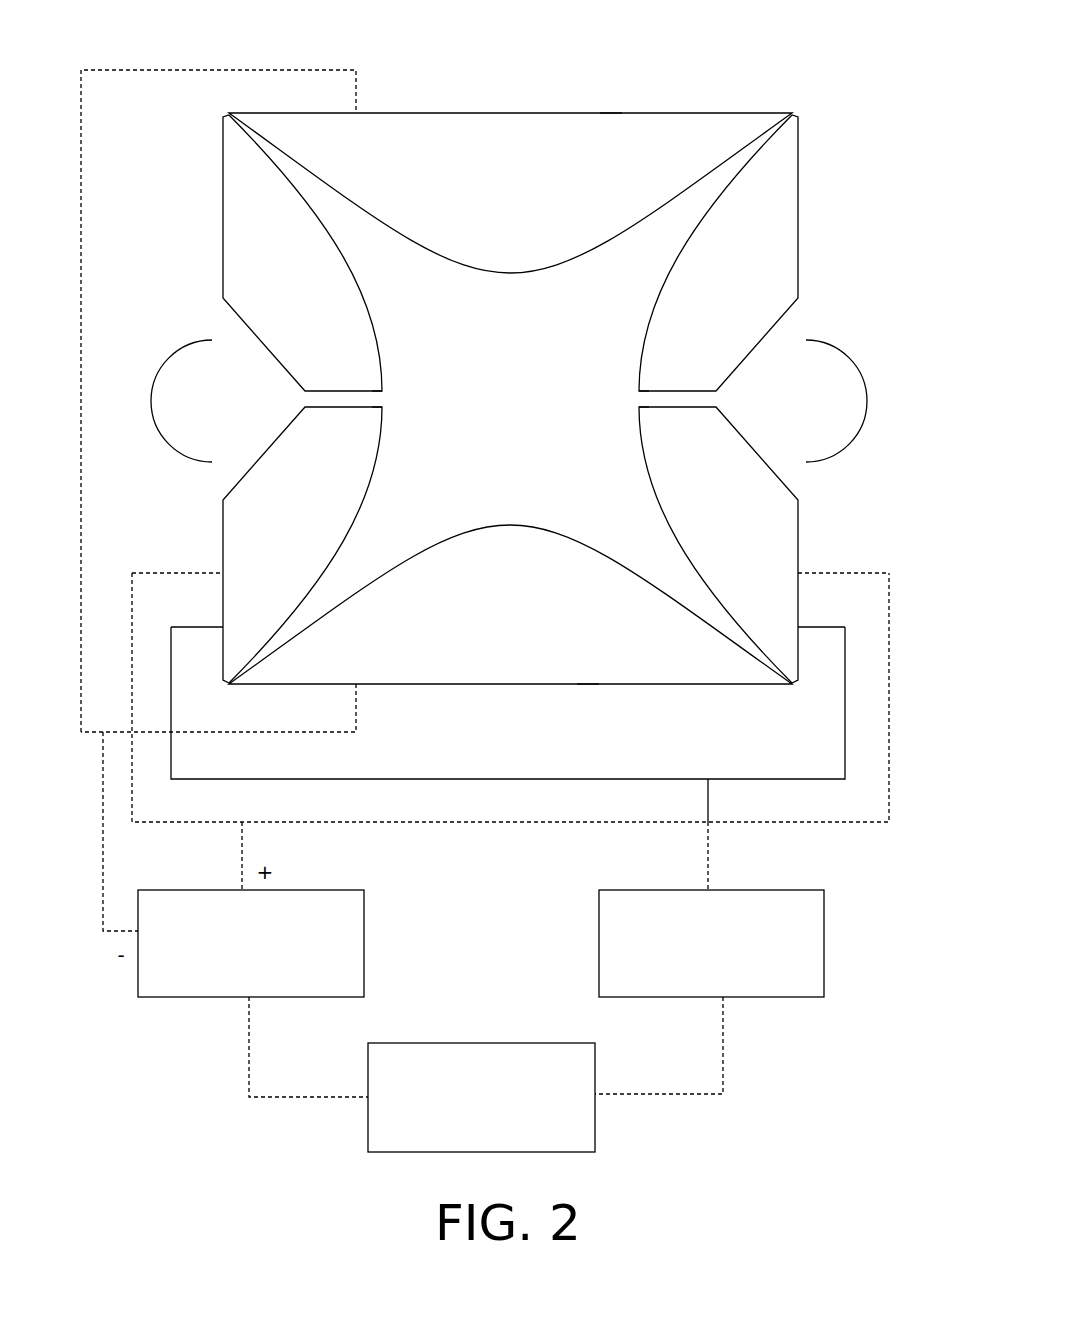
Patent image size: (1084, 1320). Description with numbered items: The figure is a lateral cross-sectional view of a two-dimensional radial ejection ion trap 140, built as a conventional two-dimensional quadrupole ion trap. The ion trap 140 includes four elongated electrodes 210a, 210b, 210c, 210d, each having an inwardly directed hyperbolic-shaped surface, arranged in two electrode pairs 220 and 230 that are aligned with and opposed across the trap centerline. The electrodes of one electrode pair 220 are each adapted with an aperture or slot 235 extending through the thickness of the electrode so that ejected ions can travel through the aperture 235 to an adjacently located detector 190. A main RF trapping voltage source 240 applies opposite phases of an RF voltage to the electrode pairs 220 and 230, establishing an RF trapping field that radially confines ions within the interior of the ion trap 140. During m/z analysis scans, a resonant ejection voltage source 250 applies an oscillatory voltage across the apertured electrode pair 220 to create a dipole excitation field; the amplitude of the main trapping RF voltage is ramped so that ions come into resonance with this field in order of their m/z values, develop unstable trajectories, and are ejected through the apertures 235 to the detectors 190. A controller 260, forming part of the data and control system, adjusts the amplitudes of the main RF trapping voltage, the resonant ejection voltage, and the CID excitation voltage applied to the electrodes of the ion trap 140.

The ion trap 140 is at (432, 112).
The detector 190 is at (165, 358).
The elongated electrode 210a is at (470, 110).
The elongated electrode 210b is at (800, 200).
The elongated electrode 210c is at (521, 685).
The elongated electrode 210d is at (218, 205).
The electrode pair 220 is at (650, 447).
The electrode pair 230 is at (611, 112).
The aperture 235 is at (383, 398).
The main RF trapping voltage source 240 is at (364, 967).
The resonant ejection voltage source 250 is at (598, 947).
The controller 260 is at (432, 1152).